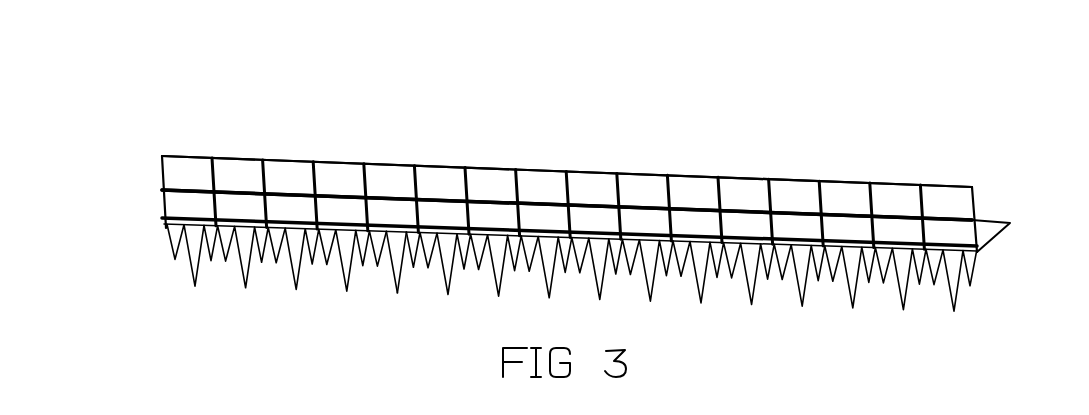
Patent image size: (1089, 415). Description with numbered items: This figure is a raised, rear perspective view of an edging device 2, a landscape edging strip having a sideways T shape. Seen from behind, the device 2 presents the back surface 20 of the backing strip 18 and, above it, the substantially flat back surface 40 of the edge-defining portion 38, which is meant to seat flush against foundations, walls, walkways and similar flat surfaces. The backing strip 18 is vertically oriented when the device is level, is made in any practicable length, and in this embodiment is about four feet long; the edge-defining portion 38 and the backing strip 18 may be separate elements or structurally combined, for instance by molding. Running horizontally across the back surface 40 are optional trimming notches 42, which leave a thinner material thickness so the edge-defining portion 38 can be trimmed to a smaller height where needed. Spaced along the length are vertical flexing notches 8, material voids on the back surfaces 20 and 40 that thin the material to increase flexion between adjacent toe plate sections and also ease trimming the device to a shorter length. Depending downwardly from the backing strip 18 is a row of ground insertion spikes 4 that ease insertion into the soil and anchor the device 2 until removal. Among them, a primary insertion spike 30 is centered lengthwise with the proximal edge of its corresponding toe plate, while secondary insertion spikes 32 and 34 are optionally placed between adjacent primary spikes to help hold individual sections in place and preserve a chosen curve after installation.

The edging device 2 is at (554, 212).
The ground insertion spikes 4 is at (572, 310).
The flexing notches 8 is at (314, 177).
The backing strip 18 is at (977, 253).
The back surface of the backing strip 20 is at (882, 262).
The primary insertion spike 30 is at (399, 304).
The secondary insertion spike 32 is at (417, 267).
The secondary insertion spike 34 is at (378, 262).
The edge-defining portion 38 is at (150, 198).
The back surface of the edge-defining portion 40 is at (240, 178).
The horizontal trimming notches 42 is at (892, 215).